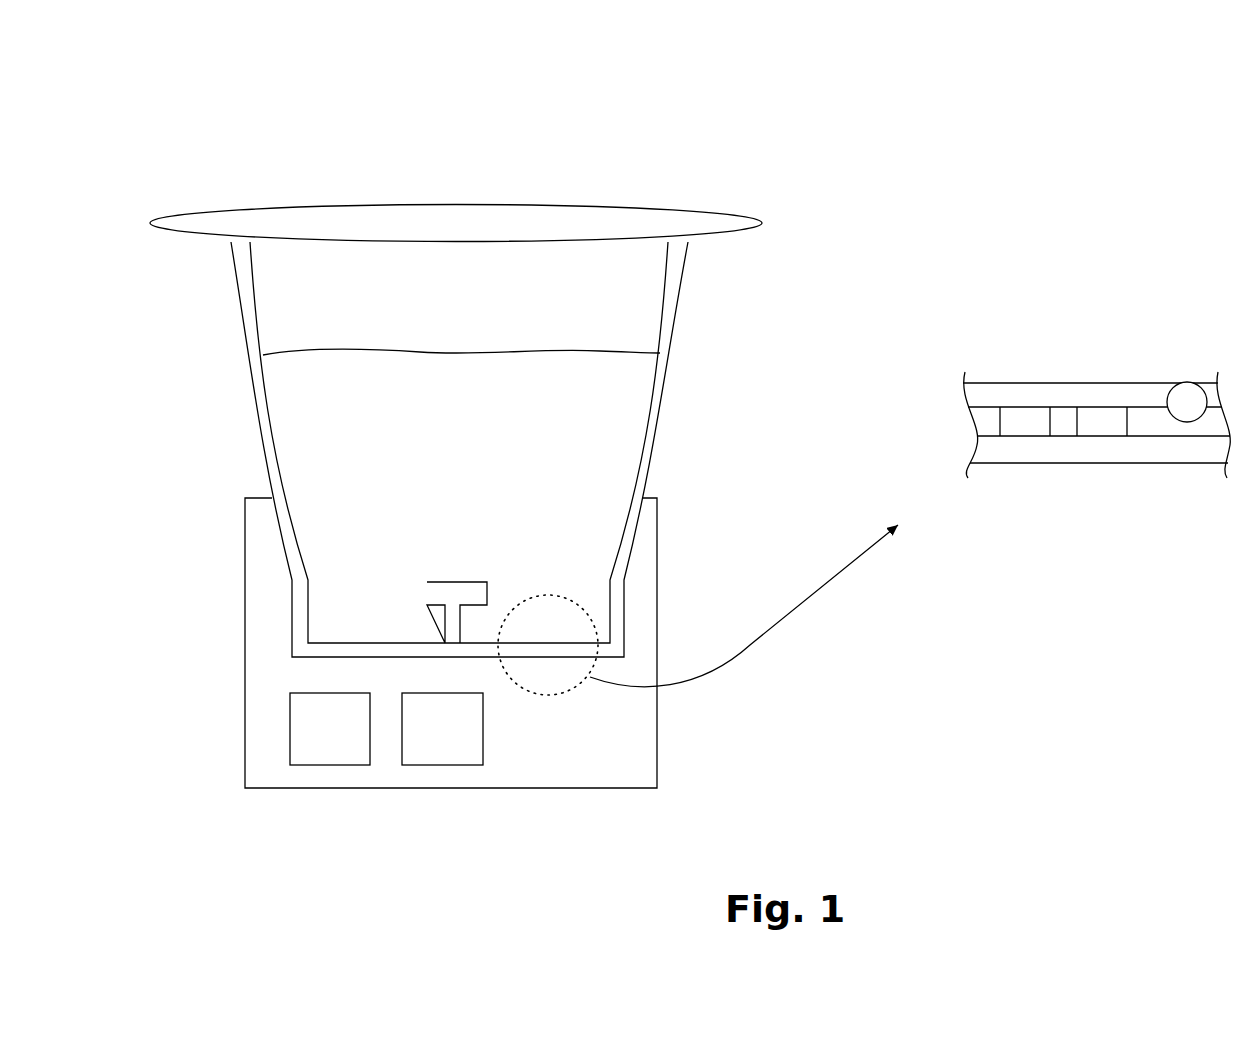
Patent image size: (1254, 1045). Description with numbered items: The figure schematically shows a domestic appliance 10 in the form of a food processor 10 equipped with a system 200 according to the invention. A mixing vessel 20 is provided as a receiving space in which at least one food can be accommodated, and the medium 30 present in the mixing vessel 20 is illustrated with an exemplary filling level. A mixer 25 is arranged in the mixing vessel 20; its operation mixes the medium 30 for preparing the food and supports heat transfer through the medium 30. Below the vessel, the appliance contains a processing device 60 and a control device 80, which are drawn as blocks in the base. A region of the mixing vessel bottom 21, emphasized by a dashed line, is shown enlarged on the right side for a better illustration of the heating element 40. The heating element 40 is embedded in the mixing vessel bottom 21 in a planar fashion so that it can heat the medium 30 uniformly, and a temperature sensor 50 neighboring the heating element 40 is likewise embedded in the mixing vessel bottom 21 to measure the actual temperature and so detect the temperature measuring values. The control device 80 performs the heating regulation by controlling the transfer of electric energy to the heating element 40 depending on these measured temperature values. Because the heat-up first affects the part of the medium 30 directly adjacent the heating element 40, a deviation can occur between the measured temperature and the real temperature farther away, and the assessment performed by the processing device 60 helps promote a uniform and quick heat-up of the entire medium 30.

The domestic appliance 10 is at (172, 132).
The mixing vessel 20 is at (246, 393).
The mixing vessel bottom 21 is at (627, 647).
The mixer 25 is at (445, 623).
The medium 30 is at (587, 477).
The heating element 40 is at (1025, 422).
The temperature sensor 50 is at (1185, 405).
The processing device 60 is at (348, 742).
The control device 80 is at (425, 742).
The system 200 is at (864, 442).